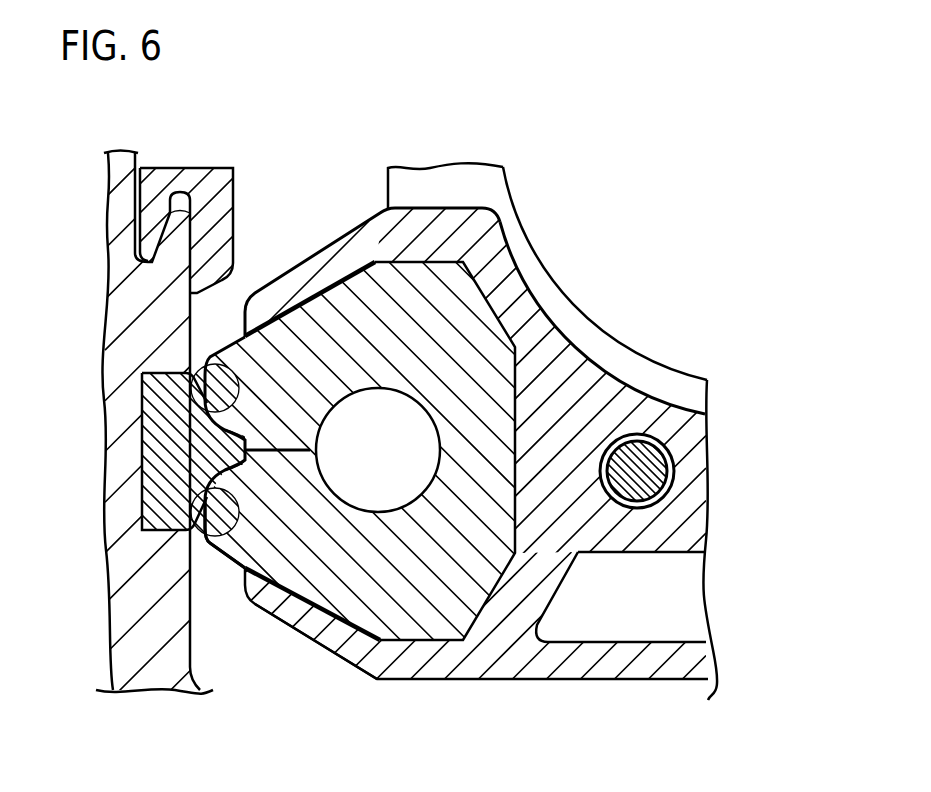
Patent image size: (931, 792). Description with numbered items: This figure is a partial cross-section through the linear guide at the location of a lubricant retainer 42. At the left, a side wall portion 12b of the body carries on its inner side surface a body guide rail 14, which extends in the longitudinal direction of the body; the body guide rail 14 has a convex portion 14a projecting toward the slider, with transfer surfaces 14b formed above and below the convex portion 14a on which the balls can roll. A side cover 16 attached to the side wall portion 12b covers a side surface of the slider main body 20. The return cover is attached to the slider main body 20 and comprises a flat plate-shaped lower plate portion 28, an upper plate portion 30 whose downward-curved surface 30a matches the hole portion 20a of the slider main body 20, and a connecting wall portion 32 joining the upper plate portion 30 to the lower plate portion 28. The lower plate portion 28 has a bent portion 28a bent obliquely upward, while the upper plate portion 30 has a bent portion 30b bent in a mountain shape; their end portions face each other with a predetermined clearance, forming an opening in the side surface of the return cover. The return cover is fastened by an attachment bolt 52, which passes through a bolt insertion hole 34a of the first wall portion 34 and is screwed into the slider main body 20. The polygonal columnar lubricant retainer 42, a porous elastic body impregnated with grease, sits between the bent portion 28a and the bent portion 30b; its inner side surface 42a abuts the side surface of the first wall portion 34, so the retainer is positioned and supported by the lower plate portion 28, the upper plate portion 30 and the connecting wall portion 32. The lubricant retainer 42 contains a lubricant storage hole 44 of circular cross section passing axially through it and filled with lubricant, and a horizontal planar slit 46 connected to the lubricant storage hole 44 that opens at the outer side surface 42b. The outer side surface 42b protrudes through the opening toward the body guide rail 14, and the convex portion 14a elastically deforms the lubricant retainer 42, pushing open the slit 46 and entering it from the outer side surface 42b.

The side wall portion 12b is at (145, 630).
The body guide rail 14 is at (168, 456).
The convex portion 14a is at (243, 452).
The transfer surface 14b is at (205, 364).
The side cover 16 is at (223, 207).
The slider main body 20 is at (452, 188).
The hole portion 20a is at (532, 238).
The lower plate portion 28 is at (633, 663).
The bent portion 28a is at (290, 618).
The upper plate portion 30 is at (545, 327).
The curved surface 30a is at (628, 377).
The bent portion 30b is at (362, 245).
The connecting wall portion 32 is at (647, 590).
The first wall portion 34 is at (515, 588).
The bolt insertion hole 34a is at (612, 478).
The lubricant retainer 42 is at (382, 600).
The inner side surface 42a is at (525, 497).
The outer side surface 42b is at (203, 528).
The lubricant storage hole 44 is at (378, 450).
The slit 46 is at (302, 455).
The attachment bolt 52 is at (648, 485).